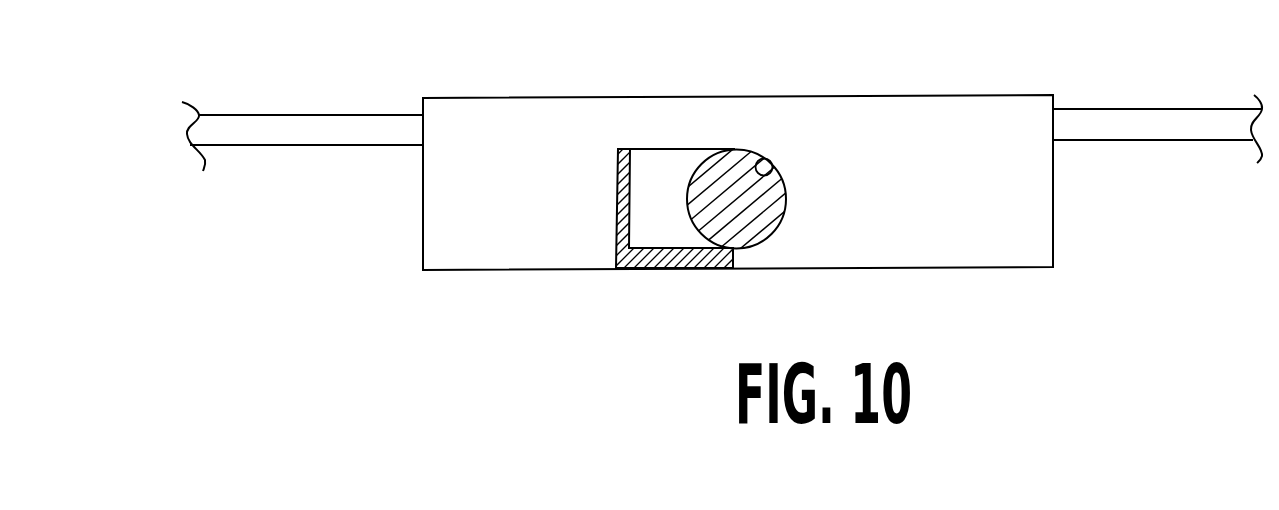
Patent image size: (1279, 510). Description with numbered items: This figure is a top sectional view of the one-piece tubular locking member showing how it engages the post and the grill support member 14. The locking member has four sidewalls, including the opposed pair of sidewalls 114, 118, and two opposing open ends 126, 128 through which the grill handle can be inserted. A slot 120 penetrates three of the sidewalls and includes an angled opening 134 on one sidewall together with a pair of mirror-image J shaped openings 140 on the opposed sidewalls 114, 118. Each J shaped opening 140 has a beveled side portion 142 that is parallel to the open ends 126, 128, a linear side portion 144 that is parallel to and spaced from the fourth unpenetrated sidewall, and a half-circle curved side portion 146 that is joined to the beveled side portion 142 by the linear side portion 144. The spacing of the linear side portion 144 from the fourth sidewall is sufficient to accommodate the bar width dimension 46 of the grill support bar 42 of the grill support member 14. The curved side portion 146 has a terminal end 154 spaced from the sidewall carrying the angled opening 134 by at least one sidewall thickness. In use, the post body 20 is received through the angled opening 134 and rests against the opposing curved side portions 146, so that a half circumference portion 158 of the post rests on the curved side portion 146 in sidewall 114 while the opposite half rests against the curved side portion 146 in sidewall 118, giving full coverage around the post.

The grill support member 14 is at (365, 115).
The open end 126 is at (422, 186).
The open end 128 is at (1053, 180).
The grill support bar 42 is at (1105, 110).
The bar width dimension 46 is at (1163, 130).
The sidewall 114 is at (958, 219).
The J shaped opening 140 is at (643, 149).
The linear side portion 144 is at (690, 149).
The beveled side portion 142 is at (618, 196).
The sidewall 118 is at (678, 209).
The angled opening 134 is at (662, 269).
The terminal end 154 is at (734, 251).
The slot 120 is at (727, 150).
The curved side portion 146 is at (786, 193).
The half circumference portion 158 is at (758, 162).
The post body 20 is at (700, 205).